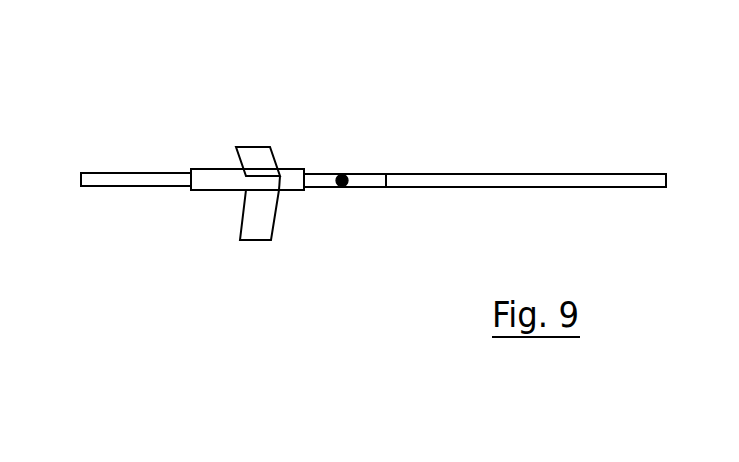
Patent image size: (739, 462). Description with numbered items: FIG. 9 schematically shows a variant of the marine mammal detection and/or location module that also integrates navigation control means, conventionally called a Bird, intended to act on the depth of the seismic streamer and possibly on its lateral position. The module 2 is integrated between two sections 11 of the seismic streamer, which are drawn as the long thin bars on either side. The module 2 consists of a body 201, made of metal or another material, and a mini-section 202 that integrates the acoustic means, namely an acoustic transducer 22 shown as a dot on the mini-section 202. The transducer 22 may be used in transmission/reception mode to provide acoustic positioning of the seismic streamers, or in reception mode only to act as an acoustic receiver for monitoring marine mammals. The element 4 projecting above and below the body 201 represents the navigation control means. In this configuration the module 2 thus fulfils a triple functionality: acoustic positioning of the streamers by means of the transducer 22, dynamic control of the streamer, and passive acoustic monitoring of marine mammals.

The module 2 is at (124, 238).
The sections 11 is at (112, 173).
The metal body 201 is at (227, 190).
The mini-section 202 is at (364, 174).
The acoustic transducer 22 is at (342, 187).
The strap / flag element 4 is at (280, 155).